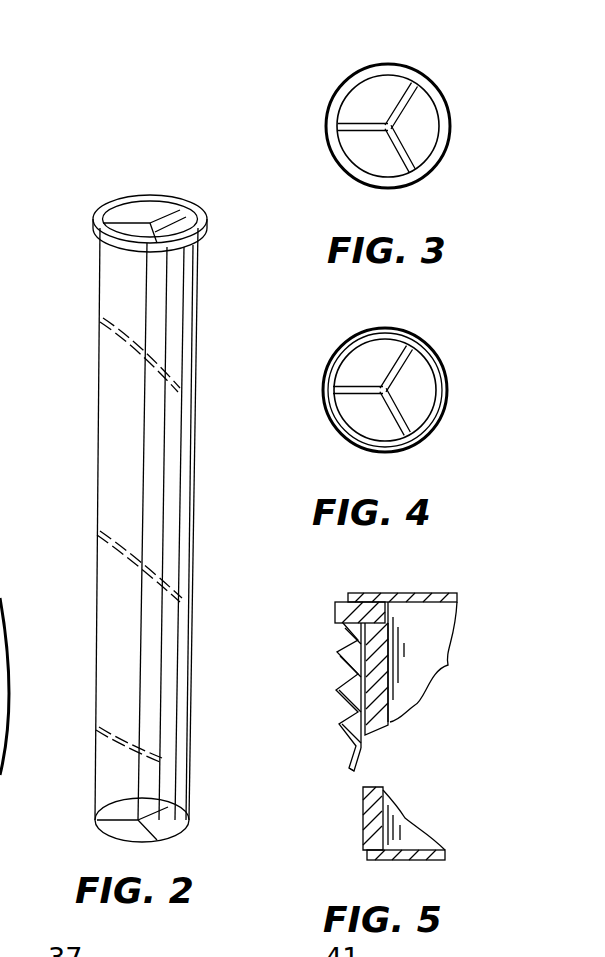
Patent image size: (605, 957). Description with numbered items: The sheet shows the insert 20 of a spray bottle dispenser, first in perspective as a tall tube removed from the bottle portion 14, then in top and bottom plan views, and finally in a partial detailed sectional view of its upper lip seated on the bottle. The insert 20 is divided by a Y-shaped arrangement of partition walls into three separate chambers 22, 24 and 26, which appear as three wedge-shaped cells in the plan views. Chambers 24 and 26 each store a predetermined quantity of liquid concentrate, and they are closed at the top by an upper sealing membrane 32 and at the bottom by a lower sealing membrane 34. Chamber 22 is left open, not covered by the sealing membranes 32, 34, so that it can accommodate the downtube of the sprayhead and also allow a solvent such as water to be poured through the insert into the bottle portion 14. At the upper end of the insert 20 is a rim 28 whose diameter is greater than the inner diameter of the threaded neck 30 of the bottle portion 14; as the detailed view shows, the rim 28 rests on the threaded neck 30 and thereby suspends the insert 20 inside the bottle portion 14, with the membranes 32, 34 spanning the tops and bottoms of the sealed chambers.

In FIG. 5, the bottle portion 14 is at (348, 752).
In FIG. 2, the insert 20 is at (97, 472).
In FIG. 3, the insert 20 is at (418, 180).
In FIG. 4, the insert 20 is at (427, 342).
In FIG. 5, the insert 20 is at (390, 700).
In FIG. 2, the chamber 22 is at (180, 220).
In FIG. 3, the chamber 22 is at (420, 123).
In FIG. 4, the chamber 22 is at (418, 388).
In FIG. 2, the chamber 24 is at (123, 237).
In FIG. 3, the chamber 24 is at (352, 147).
In FIG. 4, the chamber 24 is at (353, 362).
In FIG. 2, the chamber 26 is at (132, 210).
In FIG. 3, the chamber 26 is at (373, 83).
In FIG. 4, the chamber 26 is at (357, 408).
In FIG. 5, the chamber 26 is at (348, 725).
In FIG. 2, the rim 28 is at (208, 228).
In FIG. 3, the rim 28 is at (427, 82).
In FIG. 4, the rim 28 is at (432, 430).
In FIG. 5, the rim 28 is at (337, 618).
In FIG. 5, the threaded neck 30 is at (353, 665).
In FIG. 5, the upper sealing membrane 32 is at (417, 595).
In FIG. 5, the lower sealing membrane 34 is at (397, 860).